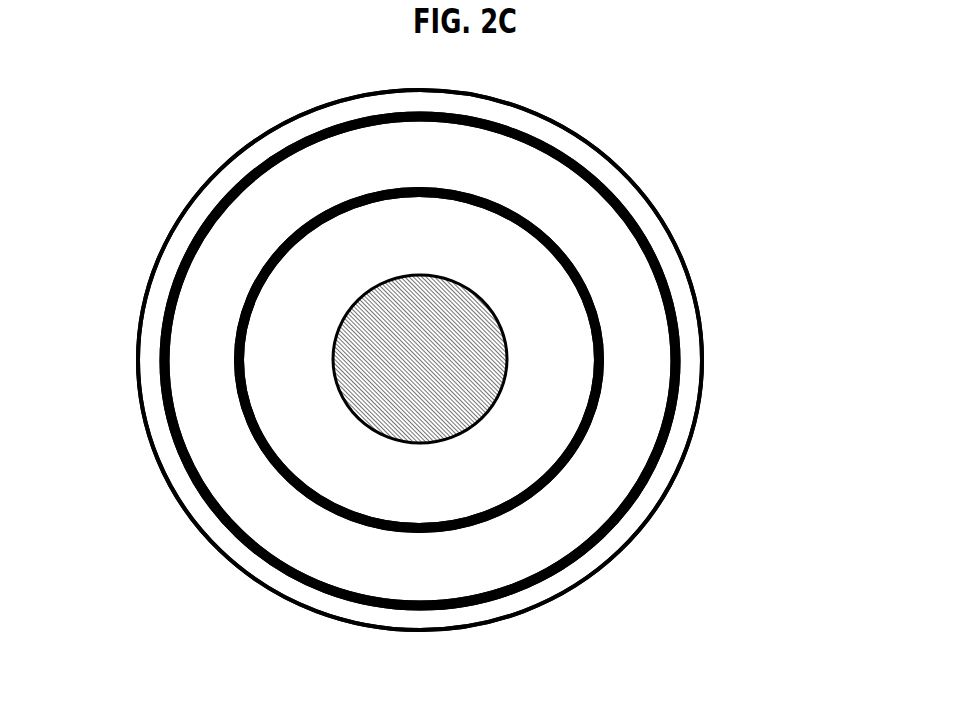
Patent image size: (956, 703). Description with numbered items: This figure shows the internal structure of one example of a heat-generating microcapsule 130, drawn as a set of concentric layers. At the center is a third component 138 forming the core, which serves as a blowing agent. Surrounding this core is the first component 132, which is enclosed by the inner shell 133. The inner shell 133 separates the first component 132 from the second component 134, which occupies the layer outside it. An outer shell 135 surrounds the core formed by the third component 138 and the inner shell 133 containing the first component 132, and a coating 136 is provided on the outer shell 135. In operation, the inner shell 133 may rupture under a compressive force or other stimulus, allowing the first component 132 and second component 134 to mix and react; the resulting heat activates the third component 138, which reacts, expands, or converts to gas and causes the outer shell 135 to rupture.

The microcapsule 130 is at (139, 88).
The first component 132 is at (483, 475).
The inner shell 133 is at (308, 488).
The second component 134 is at (212, 278).
The outer shell 135 is at (663, 424).
The coating 136 is at (642, 232).
The third component 138 is at (420, 359).